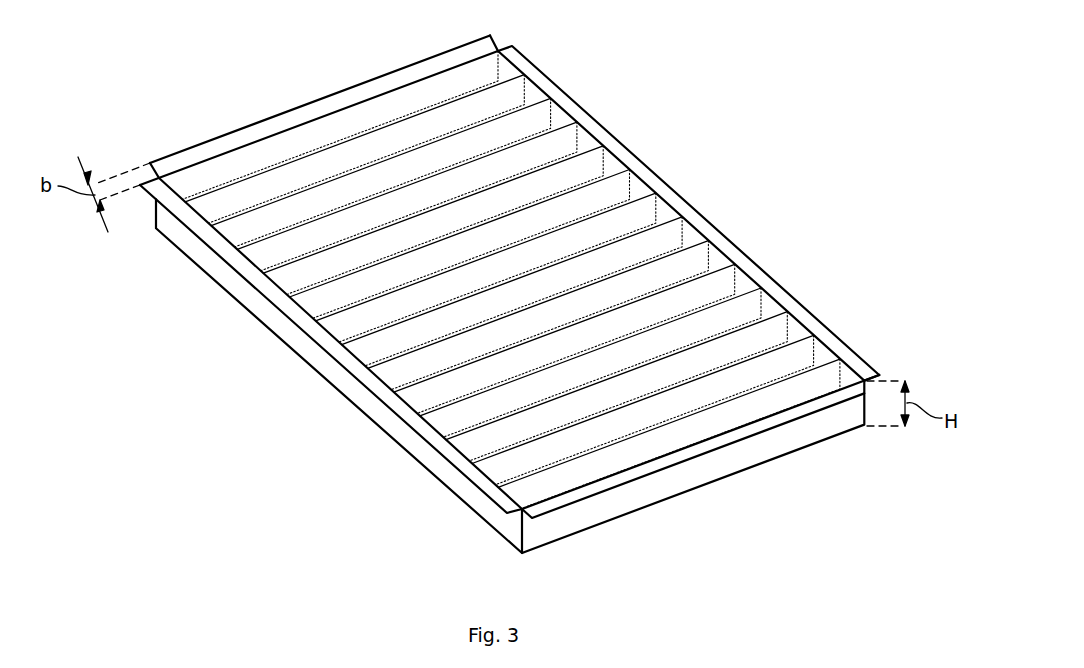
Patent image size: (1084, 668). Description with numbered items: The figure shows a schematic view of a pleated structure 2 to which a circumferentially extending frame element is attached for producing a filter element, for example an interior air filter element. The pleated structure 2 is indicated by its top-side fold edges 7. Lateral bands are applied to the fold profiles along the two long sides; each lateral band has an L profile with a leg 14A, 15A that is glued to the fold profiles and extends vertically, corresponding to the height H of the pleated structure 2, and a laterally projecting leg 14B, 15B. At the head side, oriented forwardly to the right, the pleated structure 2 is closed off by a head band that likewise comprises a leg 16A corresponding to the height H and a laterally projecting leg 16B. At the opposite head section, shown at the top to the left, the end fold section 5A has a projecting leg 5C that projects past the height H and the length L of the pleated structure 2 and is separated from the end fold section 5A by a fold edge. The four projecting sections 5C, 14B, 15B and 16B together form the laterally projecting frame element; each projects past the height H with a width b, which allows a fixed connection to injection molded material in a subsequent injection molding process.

The pleated structure 2 is at (511, 280).
The end fold section 5A is at (408, 103).
The projecting leg 5C is at (247, 135).
The top-side fold edges 7 is at (397, 250).
The leg of lateral band 14A is at (350, 388).
The laterally projecting leg of lateral band 14B is at (293, 313).
The leg of lateral band 15A is at (767, 307).
The laterally projecting leg of lateral band 15B is at (738, 258).
The leg of head band 16A is at (783, 443).
The laterally projecting leg of head band 16B is at (574, 495).